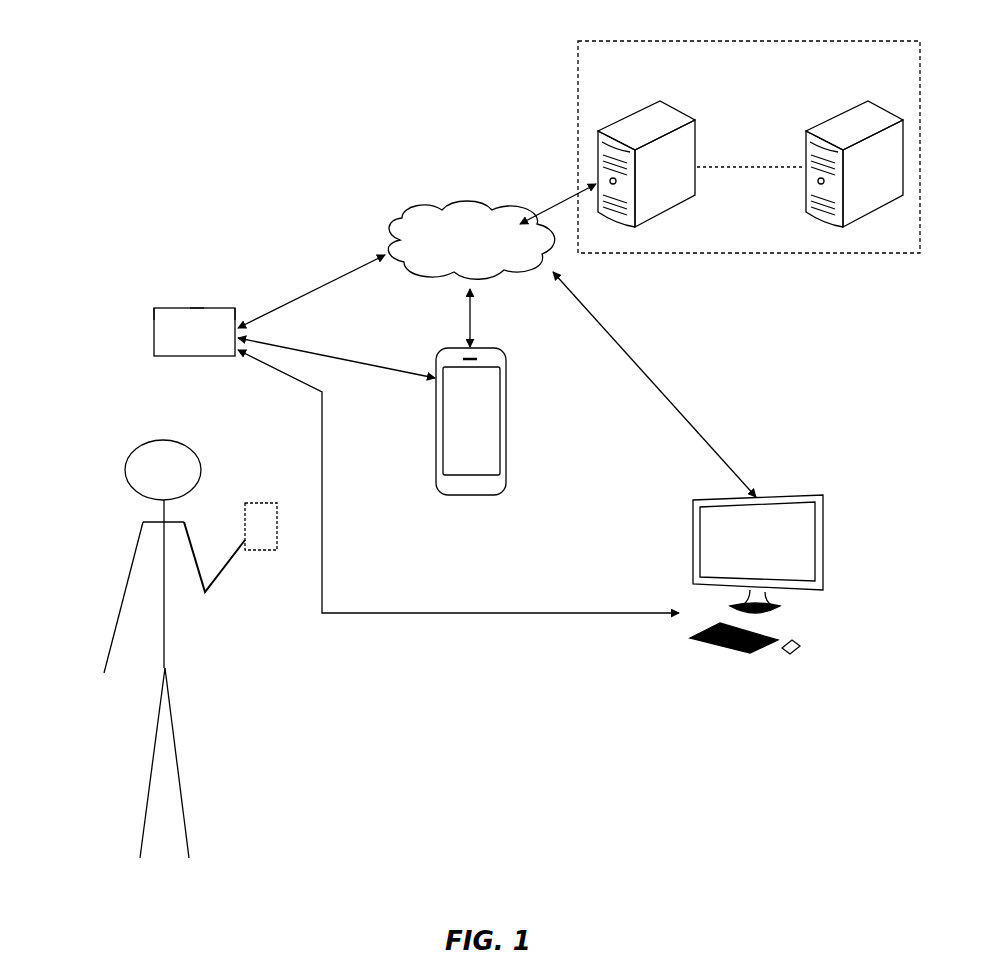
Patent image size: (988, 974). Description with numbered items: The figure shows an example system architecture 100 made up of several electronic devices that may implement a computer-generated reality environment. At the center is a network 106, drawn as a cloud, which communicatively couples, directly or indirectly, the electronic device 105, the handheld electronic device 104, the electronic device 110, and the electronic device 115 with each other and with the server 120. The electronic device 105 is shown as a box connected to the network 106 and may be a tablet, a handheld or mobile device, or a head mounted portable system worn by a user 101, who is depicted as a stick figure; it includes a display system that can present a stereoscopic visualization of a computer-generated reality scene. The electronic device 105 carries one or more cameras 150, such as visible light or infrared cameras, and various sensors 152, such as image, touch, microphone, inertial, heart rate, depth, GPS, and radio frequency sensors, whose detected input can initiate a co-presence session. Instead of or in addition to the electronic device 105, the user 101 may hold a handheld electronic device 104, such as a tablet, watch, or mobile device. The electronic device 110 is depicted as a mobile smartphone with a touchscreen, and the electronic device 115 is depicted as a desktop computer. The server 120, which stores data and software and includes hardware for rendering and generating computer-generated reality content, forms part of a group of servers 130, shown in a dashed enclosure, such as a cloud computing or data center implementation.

The system architecture 100 is at (178, 15).
The user 101 is at (137, 532).
The handheld electronic device 104 is at (273, 503).
The electronic device 105 is at (221, 306).
The network 106 is at (472, 215).
The electronic device 110 is at (470, 497).
The electronic device 115 is at (760, 664).
The server 120 is at (613, 122).
The group of servers 130 is at (712, 147).
The camera 150 is at (197, 306).
The sensors 152 is at (154, 306).